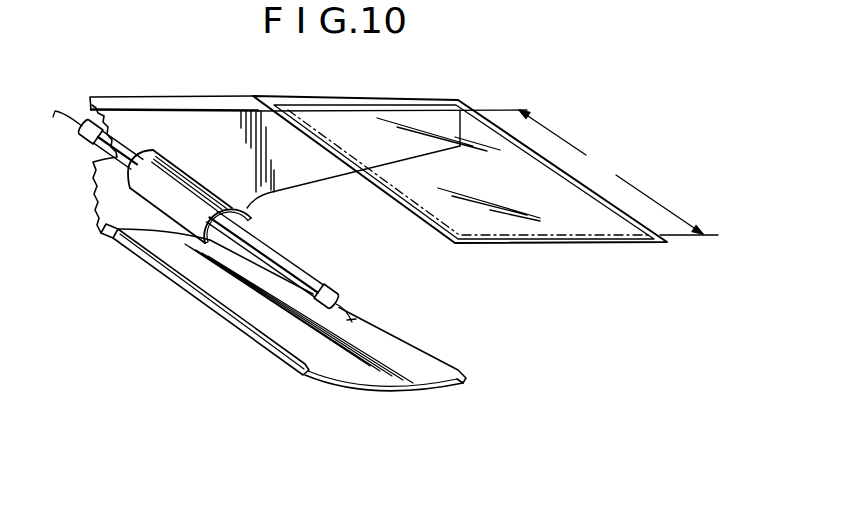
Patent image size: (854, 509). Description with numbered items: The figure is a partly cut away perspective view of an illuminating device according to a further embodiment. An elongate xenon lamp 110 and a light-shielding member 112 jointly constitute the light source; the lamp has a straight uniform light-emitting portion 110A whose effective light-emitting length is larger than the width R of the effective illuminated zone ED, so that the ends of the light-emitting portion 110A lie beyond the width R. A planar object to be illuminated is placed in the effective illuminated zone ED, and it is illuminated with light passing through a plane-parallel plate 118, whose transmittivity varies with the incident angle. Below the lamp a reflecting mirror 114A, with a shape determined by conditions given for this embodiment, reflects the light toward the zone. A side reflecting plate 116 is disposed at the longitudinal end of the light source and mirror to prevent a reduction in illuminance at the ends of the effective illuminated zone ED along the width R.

The xenon lamp 110 is at (302, 273).
The light-emitting portion 110A is at (275, 262).
The light-shielding member 112 is at (207, 187).
The reflecting mirror 114A is at (425, 370).
The side reflecting plate 116 is at (201, 107).
The plane-parallel plate 118 is at (583, 238).
The width of the effective illuminated zone R is at (618, 172).
The effective illuminated zone ED is at (545, 236).